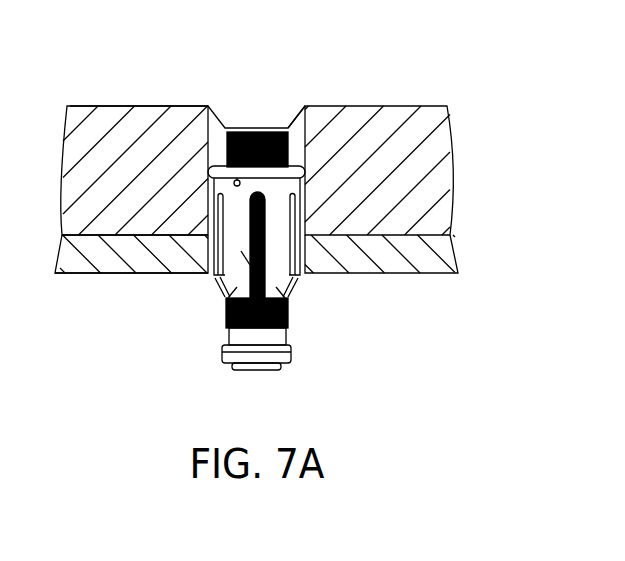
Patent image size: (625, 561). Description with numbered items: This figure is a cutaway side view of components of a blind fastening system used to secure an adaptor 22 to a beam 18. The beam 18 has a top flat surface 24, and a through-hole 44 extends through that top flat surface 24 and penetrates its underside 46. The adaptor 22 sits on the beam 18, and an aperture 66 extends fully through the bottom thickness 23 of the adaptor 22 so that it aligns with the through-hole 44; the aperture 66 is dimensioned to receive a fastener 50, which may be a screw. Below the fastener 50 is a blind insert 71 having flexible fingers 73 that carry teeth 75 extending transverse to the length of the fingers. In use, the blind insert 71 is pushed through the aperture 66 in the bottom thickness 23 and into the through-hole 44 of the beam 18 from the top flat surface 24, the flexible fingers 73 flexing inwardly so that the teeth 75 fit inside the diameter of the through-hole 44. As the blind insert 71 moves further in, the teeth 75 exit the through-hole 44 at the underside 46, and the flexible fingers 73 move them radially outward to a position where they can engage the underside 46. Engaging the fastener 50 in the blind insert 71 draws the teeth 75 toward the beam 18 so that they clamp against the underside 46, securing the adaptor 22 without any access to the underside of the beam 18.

The beam 18 is at (442, 247).
The adaptor 22 is at (442, 142).
The bottom thickness 23 is at (95, 107).
The top flat surface 24 is at (92, 235).
The through-hole 44 is at (270, 274).
The underside 46 is at (108, 275).
The fastener 50 is at (245, 128).
The aperture 66 is at (295, 125).
The blind insert 71 is at (268, 188).
The flexible fingers 73 is at (273, 257).
The teeth 75 is at (232, 290).